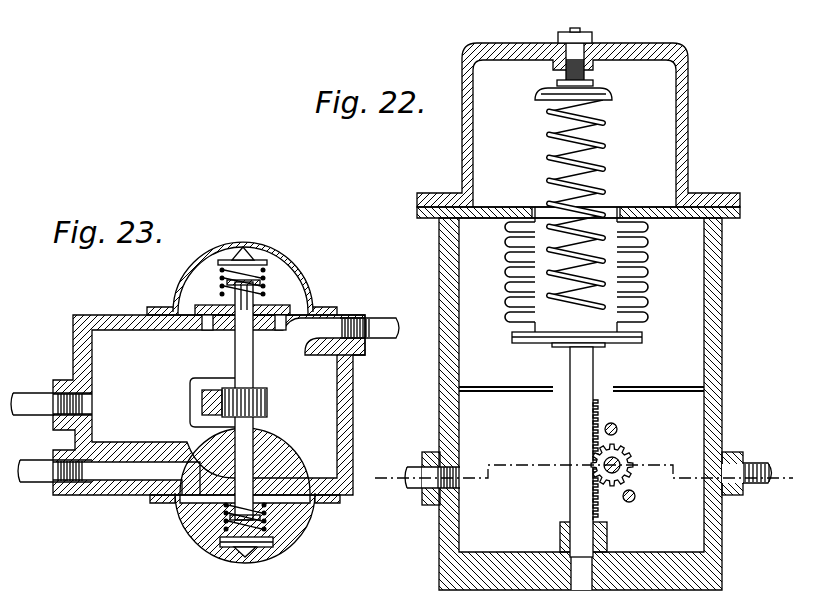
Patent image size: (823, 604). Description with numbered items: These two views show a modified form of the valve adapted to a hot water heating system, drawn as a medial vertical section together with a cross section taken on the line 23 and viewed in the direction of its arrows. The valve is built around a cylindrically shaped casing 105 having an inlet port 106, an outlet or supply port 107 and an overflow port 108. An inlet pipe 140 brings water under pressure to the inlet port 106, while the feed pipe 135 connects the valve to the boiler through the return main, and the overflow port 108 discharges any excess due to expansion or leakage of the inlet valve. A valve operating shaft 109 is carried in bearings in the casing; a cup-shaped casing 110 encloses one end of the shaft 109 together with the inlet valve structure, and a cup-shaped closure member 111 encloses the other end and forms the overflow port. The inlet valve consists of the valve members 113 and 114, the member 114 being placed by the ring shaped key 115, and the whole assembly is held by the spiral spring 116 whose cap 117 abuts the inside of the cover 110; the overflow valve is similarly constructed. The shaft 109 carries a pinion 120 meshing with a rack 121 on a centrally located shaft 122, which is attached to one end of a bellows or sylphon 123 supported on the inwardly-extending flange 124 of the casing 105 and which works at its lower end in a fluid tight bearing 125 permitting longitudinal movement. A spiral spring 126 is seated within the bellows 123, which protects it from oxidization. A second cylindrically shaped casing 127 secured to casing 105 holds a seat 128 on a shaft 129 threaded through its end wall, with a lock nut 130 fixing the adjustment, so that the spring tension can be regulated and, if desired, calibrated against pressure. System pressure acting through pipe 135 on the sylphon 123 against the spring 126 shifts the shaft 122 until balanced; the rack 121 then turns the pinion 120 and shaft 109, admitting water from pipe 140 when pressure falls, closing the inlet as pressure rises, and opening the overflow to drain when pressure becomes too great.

In FIG. 22, the cylindrically shaped casing 105 is at (714, 327).
In FIG. 22, the inlet port 106 is at (726, 505).
In FIG. 23, the inlet port 106 is at (338, 311).
In FIG. 22, the outlet or supply port 107 is at (456, 480).
In FIG. 23, the outlet or supply port 107 is at (72, 376).
In FIG. 23, the overflow port 108 is at (43, 474).
In FIG. 22, the valve operating shaft 109 is at (618, 460).
In FIG. 23, the valve operating shaft 109 is at (253, 365).
In FIG. 23, the cup-shaped casing 110 is at (303, 275).
In FIG. 23, the cup-shaped closure member 111 is at (308, 534).
In FIG. 23, the valve member 113 is at (264, 314).
In FIG. 23, the valve member 114 is at (284, 301).
In FIG. 23, the ring shaped key 115 is at (268, 277).
In FIG. 23, the spiral spring 116 is at (217, 272).
In FIG. 23, the cap 117 is at (259, 243).
In FIG. 23, the pinion 120 is at (267, 402).
In FIG. 22, the rack 121 is at (597, 409).
In FIG. 23, the rack 121 is at (201, 400).
In FIG. 22, the shaft 122 is at (572, 374).
In FIG. 23, the shaft 122 is at (198, 385).
In FIG. 22, the bellows or sylphon 123 is at (649, 293).
In FIG. 22, the inwardly-extending flange 124 is at (499, 213).
In FIG. 22, the fluid tight bearing 125 is at (561, 527).
In FIG. 22, the spiral spring 126 is at (590, 148).
In FIG. 22, the cylindrically shaped casing 127 is at (686, 146).
In FIG. 22, the seat 128 is at (596, 89).
In FIG. 22, the shaft 129 is at (566, 73).
In FIG. 22, the lock nut 130 is at (594, 36).
In FIG. 22, the feed pipe 135 is at (423, 481).
In FIG. 23, the feed pipe 135 is at (43, 407).
In FIG. 23, the inlet pipe 140 is at (386, 339).
In FIG. 22, the section line 23- 23 is at (392, 495).